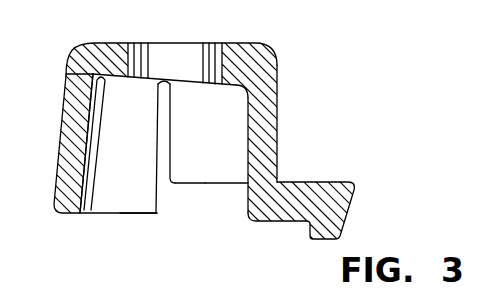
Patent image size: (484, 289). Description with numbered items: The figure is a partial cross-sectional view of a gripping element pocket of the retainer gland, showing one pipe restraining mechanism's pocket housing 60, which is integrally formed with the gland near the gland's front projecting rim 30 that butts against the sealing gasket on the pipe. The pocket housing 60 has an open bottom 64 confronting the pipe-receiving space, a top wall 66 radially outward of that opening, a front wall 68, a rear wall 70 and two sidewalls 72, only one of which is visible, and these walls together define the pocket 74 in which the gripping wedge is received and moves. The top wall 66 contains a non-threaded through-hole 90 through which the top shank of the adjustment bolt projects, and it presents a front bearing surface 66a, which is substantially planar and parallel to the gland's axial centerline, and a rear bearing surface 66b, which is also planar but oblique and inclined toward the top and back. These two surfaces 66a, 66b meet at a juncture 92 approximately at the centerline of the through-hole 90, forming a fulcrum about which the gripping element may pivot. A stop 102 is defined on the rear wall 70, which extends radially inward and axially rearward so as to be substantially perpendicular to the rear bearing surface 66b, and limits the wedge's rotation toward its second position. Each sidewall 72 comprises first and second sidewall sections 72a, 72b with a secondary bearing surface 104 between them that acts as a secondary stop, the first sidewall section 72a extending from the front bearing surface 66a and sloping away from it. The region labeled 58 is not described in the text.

The front projecting rim 30 is at (322, 182).
The inner corner recess 58 is at (250, 88).
The pocket housing 60 is at (337, 148).
The open bottom 64 is at (140, 220).
The top wall 66 is at (243, 43).
The front bearing surface 66a is at (279, 73).
The rear bearing surface 66b is at (67, 74).
The front wall 68 is at (245, 138).
The rear wall 70 is at (98, 157).
The sidewall 72 is at (182, 184).
The first sidewall section 72a is at (222, 178).
The second sidewall section 72b is at (90, 214).
The pocket 74 is at (140, 176).
The non-threaded through-hole 90 is at (146, 43).
The juncture 92 is at (172, 91).
The stop 102 is at (97, 133).
The secondary bearing surface 104 is at (168, 138).